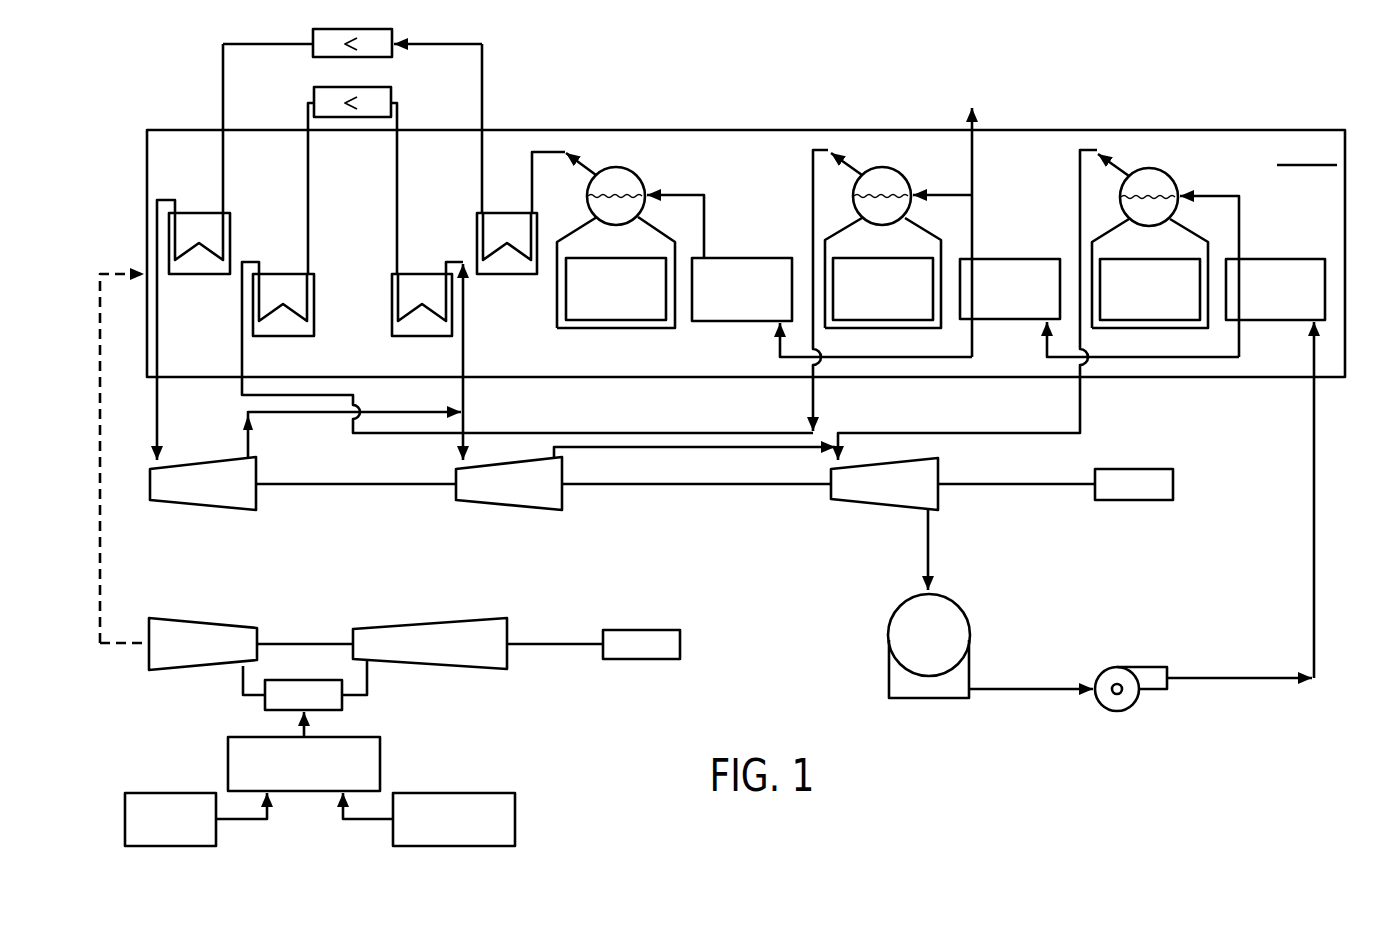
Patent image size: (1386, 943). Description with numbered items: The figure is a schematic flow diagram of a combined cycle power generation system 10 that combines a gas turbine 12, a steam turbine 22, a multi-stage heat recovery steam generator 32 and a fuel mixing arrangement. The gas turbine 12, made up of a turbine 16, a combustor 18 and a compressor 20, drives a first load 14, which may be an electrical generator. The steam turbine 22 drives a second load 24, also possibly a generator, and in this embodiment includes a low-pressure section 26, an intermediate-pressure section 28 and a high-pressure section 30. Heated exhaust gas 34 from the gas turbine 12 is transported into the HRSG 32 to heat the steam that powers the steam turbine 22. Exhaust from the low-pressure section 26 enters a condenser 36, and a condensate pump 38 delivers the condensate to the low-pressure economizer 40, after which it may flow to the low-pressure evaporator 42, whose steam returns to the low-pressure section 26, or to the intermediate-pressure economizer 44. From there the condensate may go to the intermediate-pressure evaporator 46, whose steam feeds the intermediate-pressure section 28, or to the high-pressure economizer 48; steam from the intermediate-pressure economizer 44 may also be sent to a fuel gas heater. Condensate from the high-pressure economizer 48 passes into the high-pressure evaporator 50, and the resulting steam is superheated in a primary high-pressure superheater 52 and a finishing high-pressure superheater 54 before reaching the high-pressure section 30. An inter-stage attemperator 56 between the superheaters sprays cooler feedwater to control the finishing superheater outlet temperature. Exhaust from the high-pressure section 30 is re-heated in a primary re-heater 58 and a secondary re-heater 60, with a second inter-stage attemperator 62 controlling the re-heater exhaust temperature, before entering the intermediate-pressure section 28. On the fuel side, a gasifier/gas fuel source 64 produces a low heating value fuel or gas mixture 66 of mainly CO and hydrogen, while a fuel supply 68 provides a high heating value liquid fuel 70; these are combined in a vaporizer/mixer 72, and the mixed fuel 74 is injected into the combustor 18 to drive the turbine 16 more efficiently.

The combined cycle power generation system 10 is at (1294, 107).
The gas turbine 12 is at (449, 732).
The first load 14 is at (643, 630).
The turbine 16 is at (203, 621).
The combustor 18 is at (323, 680).
The compressor 20 is at (428, 621).
The steam turbine 22 is at (593, 501).
The second load 24 is at (1137, 469).
The low-pressure section 26 is at (882, 505).
The intermediate-pressure section 28 is at (507, 505).
The high-pressure section 30 is at (200, 505).
The heat recovery steam generator 32 is at (745, 130).
The heated exhaust gas 34 is at (100, 553).
The condenser 36 is at (889, 665).
The condensate pump 38 is at (1130, 708).
The low-pressure economizer 40 is at (1277, 259).
The low-pressure evaporator 42 is at (1190, 227).
The intermediate-pressure economizer 44 is at (1009, 259).
The intermediate-pressure evaporator 46 is at (925, 228).
The high-pressure economizer 48 is at (742, 258).
The high-pressure evaporator 50 is at (654, 229).
The primary high-pressure superheater 52 is at (503, 275).
The finishing high-pressure superheater 54 is at (199, 275).
The inter-stage attemperator 56 is at (393, 57).
The primary re-heater 58 is at (392, 306).
The secondary re-heater 60 is at (315, 304).
The inter-stage attemperator 62 is at (313, 90).
The gasifier/gas fuel source 64 is at (425, 793).
The fuel or gas mixture 66 is at (386, 820).
The fuel supply 68 is at (170, 793).
The liquid fuel 70 is at (240, 820).
The vaporizer/mixer 72 is at (228, 765).
The mixed fuel 74 is at (303, 730).